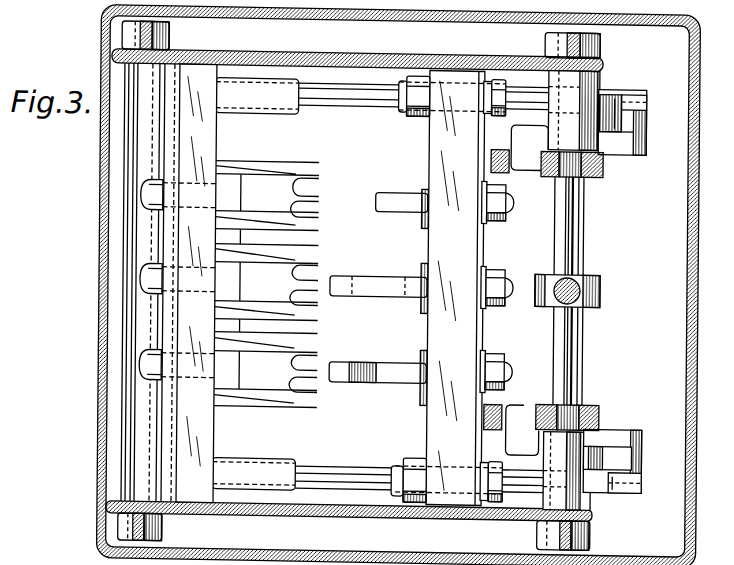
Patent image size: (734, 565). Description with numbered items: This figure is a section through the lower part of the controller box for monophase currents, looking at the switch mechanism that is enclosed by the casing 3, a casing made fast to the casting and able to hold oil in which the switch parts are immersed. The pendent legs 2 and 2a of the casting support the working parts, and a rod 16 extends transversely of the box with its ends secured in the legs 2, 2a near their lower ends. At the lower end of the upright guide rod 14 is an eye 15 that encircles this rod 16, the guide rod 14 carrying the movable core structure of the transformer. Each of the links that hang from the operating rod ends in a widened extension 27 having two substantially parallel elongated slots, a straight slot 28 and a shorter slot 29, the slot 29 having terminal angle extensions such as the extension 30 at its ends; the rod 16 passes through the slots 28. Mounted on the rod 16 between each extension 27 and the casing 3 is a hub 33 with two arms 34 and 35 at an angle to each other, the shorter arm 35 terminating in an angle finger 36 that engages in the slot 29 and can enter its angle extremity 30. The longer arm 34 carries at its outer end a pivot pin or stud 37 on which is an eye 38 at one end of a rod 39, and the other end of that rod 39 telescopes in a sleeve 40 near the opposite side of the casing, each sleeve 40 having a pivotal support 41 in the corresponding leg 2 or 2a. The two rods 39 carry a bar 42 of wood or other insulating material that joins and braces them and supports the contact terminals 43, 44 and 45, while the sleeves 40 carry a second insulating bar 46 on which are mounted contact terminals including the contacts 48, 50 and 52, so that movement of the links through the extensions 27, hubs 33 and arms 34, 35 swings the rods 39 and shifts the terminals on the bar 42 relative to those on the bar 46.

The leg 2 is at (299, 520).
The leg 2a is at (351, 58).
The casing 3 is at (100, 323).
The guide rod 14 is at (578, 282).
The eye 15 is at (598, 291).
The rod 16 is at (583, 219).
The widened extension 27 is at (601, 169).
The elongated slot 28 is at (583, 212).
The elongated slot 29 is at (510, 146).
The terminal angle extension 30 is at (538, 176).
The hub 33 is at (563, 82).
The arm 34 is at (616, 149).
The arm 35 is at (526, 290).
The angle finger 36 is at (522, 175).
The pivot pin or stud 37 is at (620, 96).
The eye 38 is at (643, 103).
The rod 39 is at (357, 106).
The sleeve 40 is at (274, 102).
The pivotal support 41 is at (131, 415).
The bar 42 is at (455, 288).
The contact terminal 43 is at (386, 385).
The contact terminal 44 is at (377, 297).
The contact terminal 45 is at (392, 212).
The bar 46 is at (201, 437).
The contact terminal 48 is at (291, 384).
The contact terminal 50 is at (292, 272).
The contact terminal 52 is at (291, 205).